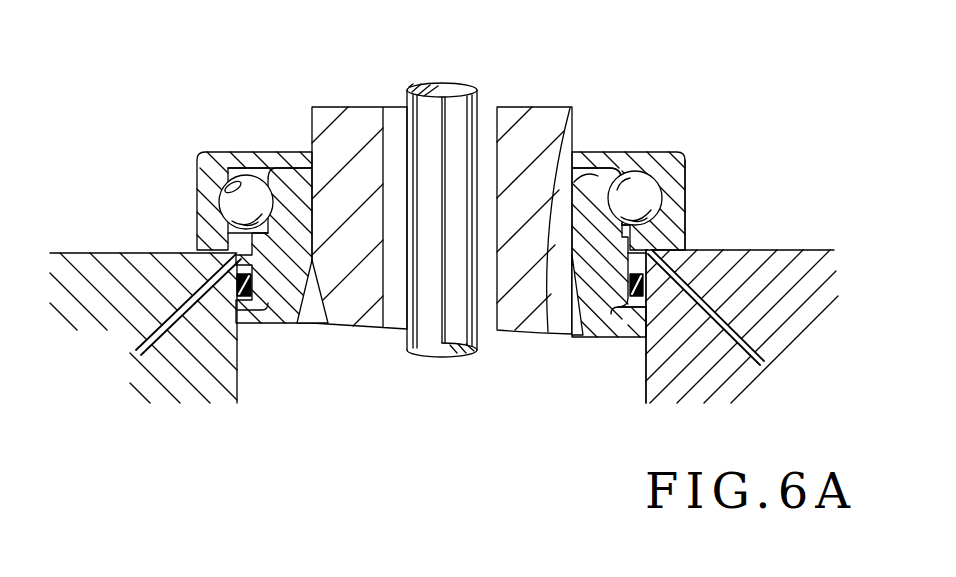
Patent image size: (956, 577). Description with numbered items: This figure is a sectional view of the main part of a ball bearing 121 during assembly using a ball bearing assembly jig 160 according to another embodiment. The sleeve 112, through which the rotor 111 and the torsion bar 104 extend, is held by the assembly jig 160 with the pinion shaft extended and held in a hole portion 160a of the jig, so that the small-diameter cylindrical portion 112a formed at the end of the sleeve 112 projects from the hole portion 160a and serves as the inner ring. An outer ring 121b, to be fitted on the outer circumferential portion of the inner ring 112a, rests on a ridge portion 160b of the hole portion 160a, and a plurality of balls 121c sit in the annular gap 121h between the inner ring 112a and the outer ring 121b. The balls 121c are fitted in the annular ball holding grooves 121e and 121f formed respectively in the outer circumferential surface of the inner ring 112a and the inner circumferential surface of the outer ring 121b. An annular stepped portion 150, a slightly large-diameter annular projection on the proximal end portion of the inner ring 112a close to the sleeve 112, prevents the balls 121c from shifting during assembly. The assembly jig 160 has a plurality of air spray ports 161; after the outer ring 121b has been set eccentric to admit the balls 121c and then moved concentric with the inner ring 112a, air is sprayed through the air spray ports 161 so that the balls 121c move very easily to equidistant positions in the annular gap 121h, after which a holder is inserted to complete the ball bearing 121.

The torsion bar 104 is at (427, 343).
The rotor 111 is at (352, 302).
The sleeve 112 is at (284, 297).
The small-diameter cylindrical portion 112a is at (596, 186).
The ball bearing 121 is at (452, 192).
The outer ring 121b is at (203, 176).
The balls 121c is at (257, 187).
The annular ball holding groove 121e is at (266, 312).
The annular ball holding groove 121f is at (233, 178).
The annular gap 121h is at (230, 240).
The annular stepped portion 150 is at (729, 204).
The ball bearing assembly jig 160 is at (787, 302).
The hole portion 160a is at (643, 360).
The ridge portion 160b is at (160, 243).
The air spray ports 161 is at (232, 256).